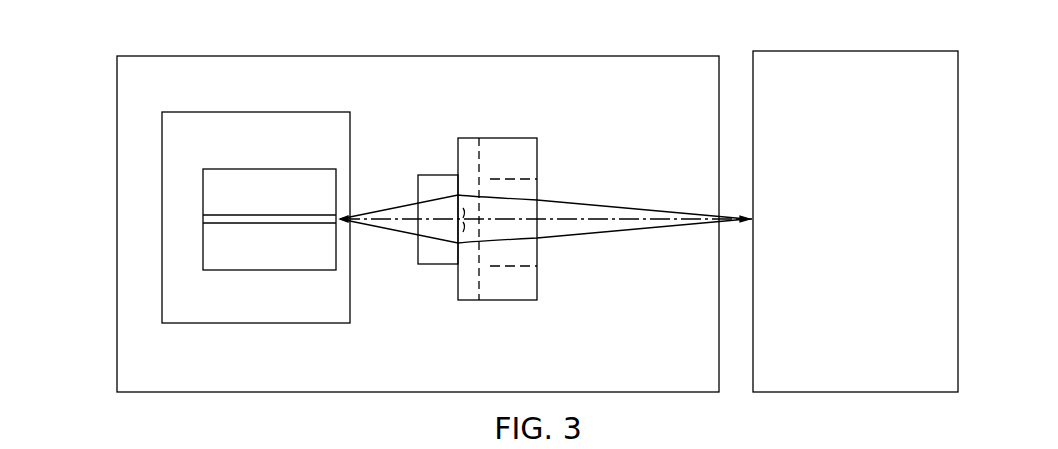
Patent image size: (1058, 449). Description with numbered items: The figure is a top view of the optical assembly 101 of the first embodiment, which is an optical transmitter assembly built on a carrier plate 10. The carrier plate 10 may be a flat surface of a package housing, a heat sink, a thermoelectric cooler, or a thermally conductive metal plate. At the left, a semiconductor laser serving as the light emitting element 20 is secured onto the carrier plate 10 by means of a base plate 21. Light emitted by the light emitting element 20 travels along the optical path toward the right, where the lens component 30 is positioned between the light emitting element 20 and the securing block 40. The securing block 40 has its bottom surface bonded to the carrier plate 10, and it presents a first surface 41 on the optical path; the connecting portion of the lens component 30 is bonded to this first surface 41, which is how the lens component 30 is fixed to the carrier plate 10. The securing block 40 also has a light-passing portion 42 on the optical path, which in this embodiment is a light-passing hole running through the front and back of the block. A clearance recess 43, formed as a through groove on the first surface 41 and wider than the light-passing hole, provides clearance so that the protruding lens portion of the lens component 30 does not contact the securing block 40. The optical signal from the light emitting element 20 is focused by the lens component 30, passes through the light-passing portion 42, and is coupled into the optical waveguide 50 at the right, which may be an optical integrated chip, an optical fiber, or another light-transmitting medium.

The optical assembly 101 is at (83, 22).
The carrier plate 10 is at (373, 70).
The light emitting element 20 is at (300, 182).
The base plate 21 is at (212, 122).
The lens component 30 is at (430, 178).
The securing block 40 is at (513, 142).
The first surface 41 is at (456, 282).
The light-passing portion 42 is at (535, 190).
The clearance recess 43 is at (479, 290).
The optical waveguide 50 is at (787, 70).